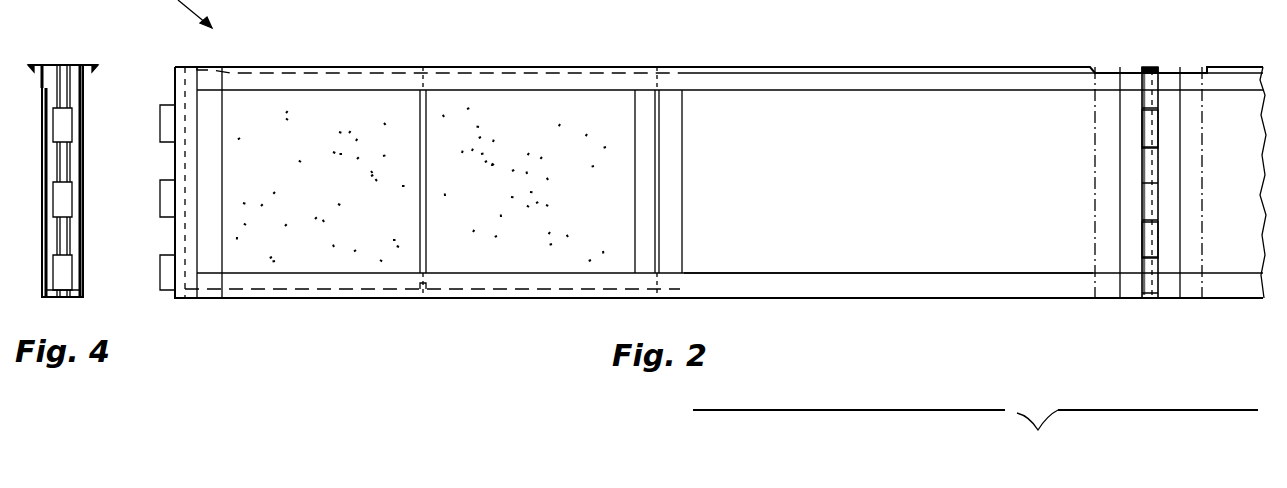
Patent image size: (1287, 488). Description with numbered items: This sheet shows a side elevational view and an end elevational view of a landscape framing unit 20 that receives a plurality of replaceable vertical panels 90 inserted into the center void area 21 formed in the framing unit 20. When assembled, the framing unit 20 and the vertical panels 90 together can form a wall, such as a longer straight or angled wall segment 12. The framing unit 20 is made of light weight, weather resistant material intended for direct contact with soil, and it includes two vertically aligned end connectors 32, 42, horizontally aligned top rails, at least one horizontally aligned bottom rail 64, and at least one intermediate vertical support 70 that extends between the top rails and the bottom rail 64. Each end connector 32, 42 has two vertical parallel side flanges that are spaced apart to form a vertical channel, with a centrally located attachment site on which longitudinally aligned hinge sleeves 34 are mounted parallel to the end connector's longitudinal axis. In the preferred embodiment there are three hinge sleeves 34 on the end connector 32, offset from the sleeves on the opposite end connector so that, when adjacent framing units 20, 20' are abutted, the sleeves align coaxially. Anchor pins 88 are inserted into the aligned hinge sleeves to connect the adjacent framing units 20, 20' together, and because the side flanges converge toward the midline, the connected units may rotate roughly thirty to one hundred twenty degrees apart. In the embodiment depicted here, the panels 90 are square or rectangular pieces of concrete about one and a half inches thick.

The longer straight or angled wall segment 12 is at (1038, 430).
The framing unit 20 is at (713, 150).
The adjacent framing unit 20' is at (1159, 207).
The center void area 21 is at (795, 194).
The end connector 32 is at (1097, 182).
The hinge sleeve 34 is at (1142, 95).
The end connector 42 is at (187, 298).
The bottom rail 64 is at (927, 282).
The intermediate vertical support 70 is at (684, 143).
The anchor pin 88 is at (1146, 68).
The vertical panel 90 is at (305, 258).